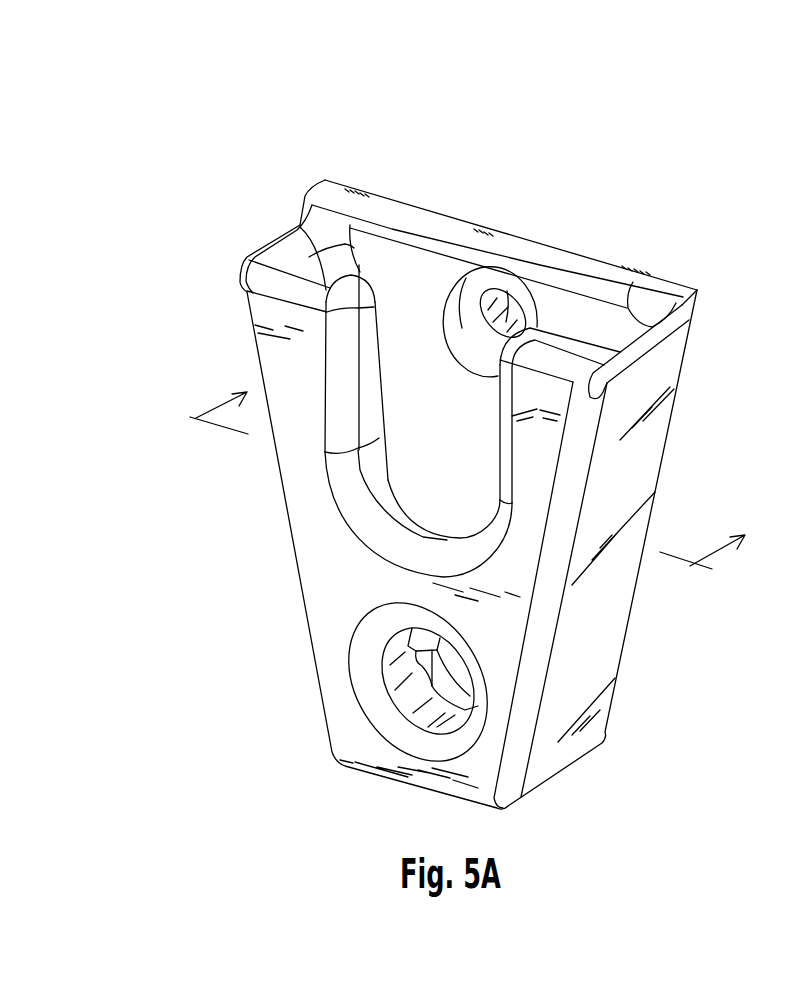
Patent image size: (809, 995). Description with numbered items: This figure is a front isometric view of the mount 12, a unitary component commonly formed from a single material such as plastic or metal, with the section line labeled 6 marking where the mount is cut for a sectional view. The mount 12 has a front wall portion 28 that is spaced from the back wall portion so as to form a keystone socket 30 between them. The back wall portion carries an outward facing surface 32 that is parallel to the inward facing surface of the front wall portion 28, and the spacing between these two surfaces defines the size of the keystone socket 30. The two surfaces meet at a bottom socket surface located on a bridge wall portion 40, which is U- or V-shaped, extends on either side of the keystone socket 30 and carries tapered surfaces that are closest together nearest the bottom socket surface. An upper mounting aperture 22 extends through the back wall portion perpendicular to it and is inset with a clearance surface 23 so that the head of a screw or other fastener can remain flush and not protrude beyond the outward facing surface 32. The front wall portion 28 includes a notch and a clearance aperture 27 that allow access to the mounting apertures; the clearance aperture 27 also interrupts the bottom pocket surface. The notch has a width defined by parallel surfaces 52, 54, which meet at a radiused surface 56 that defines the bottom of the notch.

The mount 12 is at (556, 184).
The upper mounting aperture 22 is at (506, 325).
The clearance surface 23 is at (448, 318).
The clearance aperture 27 is at (450, 707).
The front wall portion 28 is at (327, 616).
The keystone socket 30 is at (403, 490).
The outward facing surface 32 is at (460, 433).
The bridge wall portion 40 is at (596, 655).
The parallel surface 52 is at (358, 382).
The parallel surface 54 is at (502, 430).
The radiused surface 56 is at (430, 543).
The section line 6- 6 is at (476, 470).